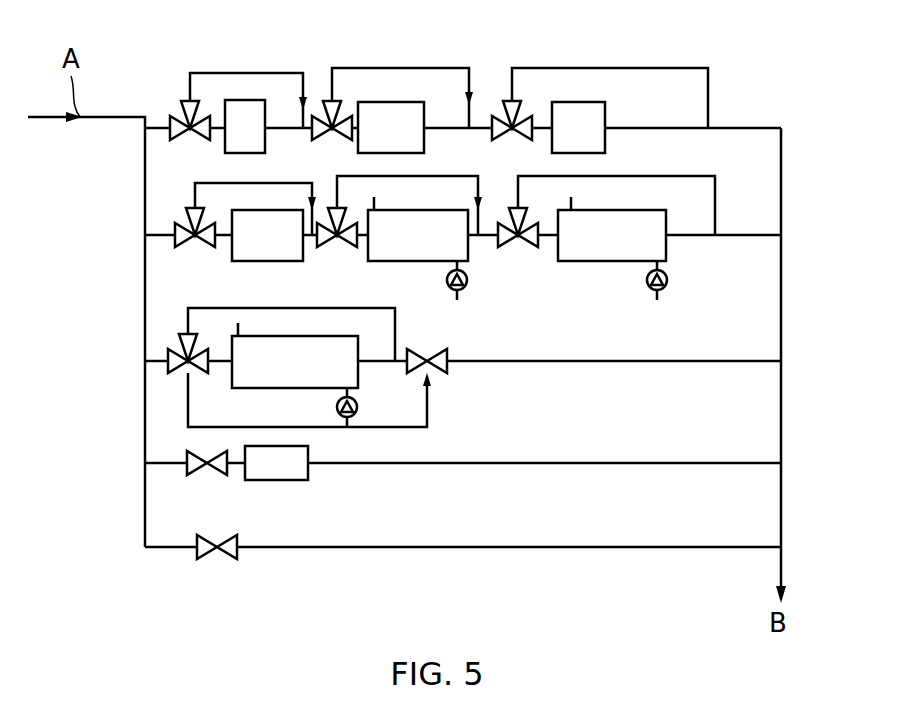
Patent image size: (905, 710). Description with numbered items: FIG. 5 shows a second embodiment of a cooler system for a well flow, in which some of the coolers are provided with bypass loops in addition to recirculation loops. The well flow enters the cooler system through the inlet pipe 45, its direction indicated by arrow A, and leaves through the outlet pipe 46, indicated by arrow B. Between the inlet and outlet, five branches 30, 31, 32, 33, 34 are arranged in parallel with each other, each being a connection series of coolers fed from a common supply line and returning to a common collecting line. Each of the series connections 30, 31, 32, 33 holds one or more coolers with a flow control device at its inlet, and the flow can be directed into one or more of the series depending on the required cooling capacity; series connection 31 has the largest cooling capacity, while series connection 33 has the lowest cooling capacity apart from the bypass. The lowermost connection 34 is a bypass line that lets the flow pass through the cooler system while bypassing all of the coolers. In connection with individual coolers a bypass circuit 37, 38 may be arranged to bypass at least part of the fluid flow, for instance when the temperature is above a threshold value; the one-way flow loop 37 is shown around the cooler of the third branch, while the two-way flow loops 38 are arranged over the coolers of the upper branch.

The branch 30 is at (500, 85).
The series connection 31 is at (741, 228).
The branch 32 is at (467, 363).
The series connection 33 is at (741, 456).
The bypass line 34 is at (741, 539).
The one-way flow loop 37 is at (183, 388).
The two-way flow loop 38 is at (246, 73).
The inlet pipe 45 is at (117, 117).
The outlet pipe 46 is at (781, 578).